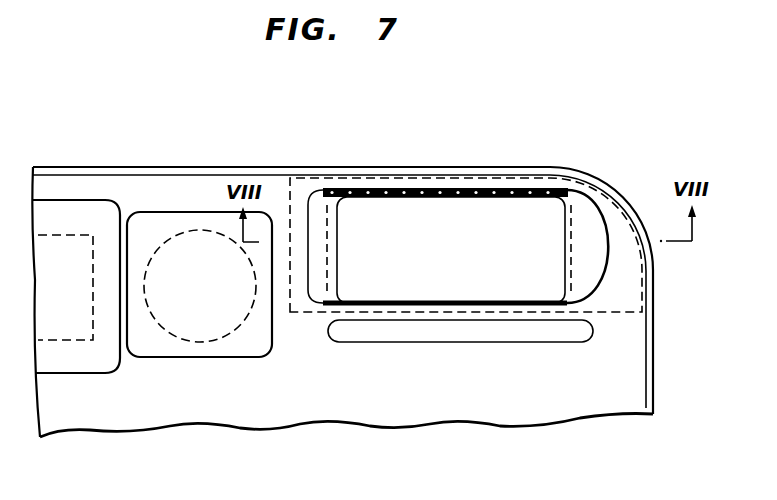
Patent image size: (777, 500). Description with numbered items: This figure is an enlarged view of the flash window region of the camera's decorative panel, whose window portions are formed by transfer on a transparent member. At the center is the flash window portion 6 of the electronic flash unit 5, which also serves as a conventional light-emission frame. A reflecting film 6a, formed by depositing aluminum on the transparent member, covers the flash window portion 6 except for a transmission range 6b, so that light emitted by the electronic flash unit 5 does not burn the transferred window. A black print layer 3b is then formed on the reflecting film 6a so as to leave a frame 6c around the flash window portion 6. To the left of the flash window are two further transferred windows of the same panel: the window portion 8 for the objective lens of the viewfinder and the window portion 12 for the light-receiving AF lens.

The black print layer 3b is at (301, 192).
The electronic flash unit 5 is at (582, 238).
The window portion 6 is at (493, 228).
The reflecting film 6a is at (585, 245).
The transmission range 6b is at (387, 288).
The frame 6c is at (588, 268).
The window portion 8 is at (90, 215).
The window portion 12 is at (160, 225).